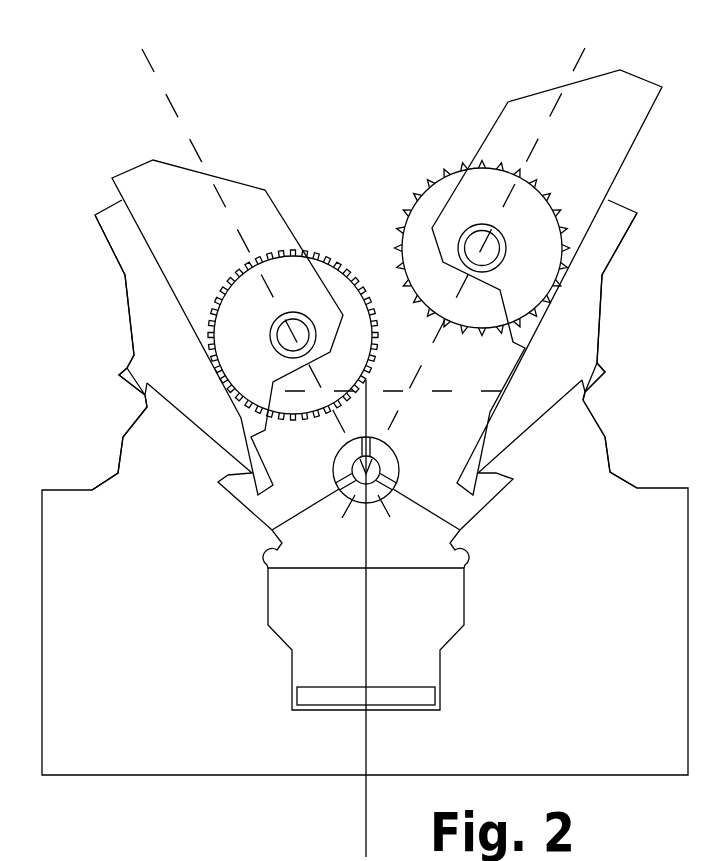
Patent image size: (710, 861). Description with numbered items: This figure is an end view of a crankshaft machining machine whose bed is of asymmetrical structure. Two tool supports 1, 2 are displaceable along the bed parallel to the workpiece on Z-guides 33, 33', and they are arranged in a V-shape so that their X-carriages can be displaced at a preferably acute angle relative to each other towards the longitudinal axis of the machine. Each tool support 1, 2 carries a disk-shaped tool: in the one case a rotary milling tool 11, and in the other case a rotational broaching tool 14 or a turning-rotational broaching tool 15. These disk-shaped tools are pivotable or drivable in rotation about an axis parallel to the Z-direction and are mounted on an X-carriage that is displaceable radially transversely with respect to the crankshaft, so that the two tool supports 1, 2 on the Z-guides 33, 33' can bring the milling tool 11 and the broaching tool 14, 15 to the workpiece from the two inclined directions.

The tool support 1 is at (227, 327).
The tool support 2 is at (547, 282).
The rotary milling tool 11 is at (317, 258).
The rotational broaching tool 14 is at (422, 193).
The turning-rotational broaching tool 15 is at (482, 173).
The Z-guide 33 is at (142, 354).
The Z-guide 33' is at (579, 350).